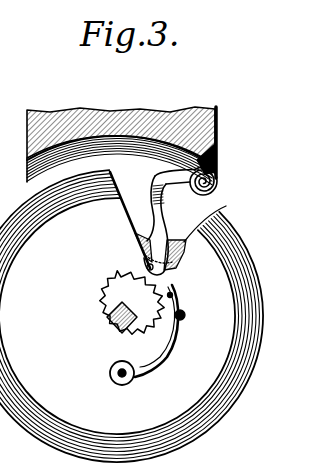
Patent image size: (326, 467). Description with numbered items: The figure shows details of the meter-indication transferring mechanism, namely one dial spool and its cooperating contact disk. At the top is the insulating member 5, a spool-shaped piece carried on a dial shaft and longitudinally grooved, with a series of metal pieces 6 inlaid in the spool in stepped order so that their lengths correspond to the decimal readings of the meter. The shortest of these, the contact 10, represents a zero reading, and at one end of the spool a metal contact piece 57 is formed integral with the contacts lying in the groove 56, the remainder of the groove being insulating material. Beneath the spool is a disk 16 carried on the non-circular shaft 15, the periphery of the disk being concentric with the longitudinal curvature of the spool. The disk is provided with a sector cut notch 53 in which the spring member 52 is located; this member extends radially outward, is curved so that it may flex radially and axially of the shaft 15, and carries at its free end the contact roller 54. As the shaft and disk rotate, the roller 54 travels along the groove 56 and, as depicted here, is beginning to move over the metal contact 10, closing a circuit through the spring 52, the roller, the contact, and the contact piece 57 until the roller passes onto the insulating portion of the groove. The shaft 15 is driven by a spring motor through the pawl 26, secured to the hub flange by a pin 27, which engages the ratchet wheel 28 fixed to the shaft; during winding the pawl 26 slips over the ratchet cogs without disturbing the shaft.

The insulating member 5 is at (58, 118).
The groove 56 is at (130, 138).
The metal contact piece 57 is at (218, 118).
The contact 10 is at (218, 140).
The contact roller 54 is at (218, 178).
The sector cut notch 53 is at (220, 219).
The metal pieces 6 is at (182, 171).
The spring member 52 is at (160, 214).
The disk 16 is at (264, 320).
The shaft 15 is at (108, 312).
The ratchet wheel 28 is at (97, 337).
The pin 27 is at (118, 384).
The pawl 26 is at (143, 378).